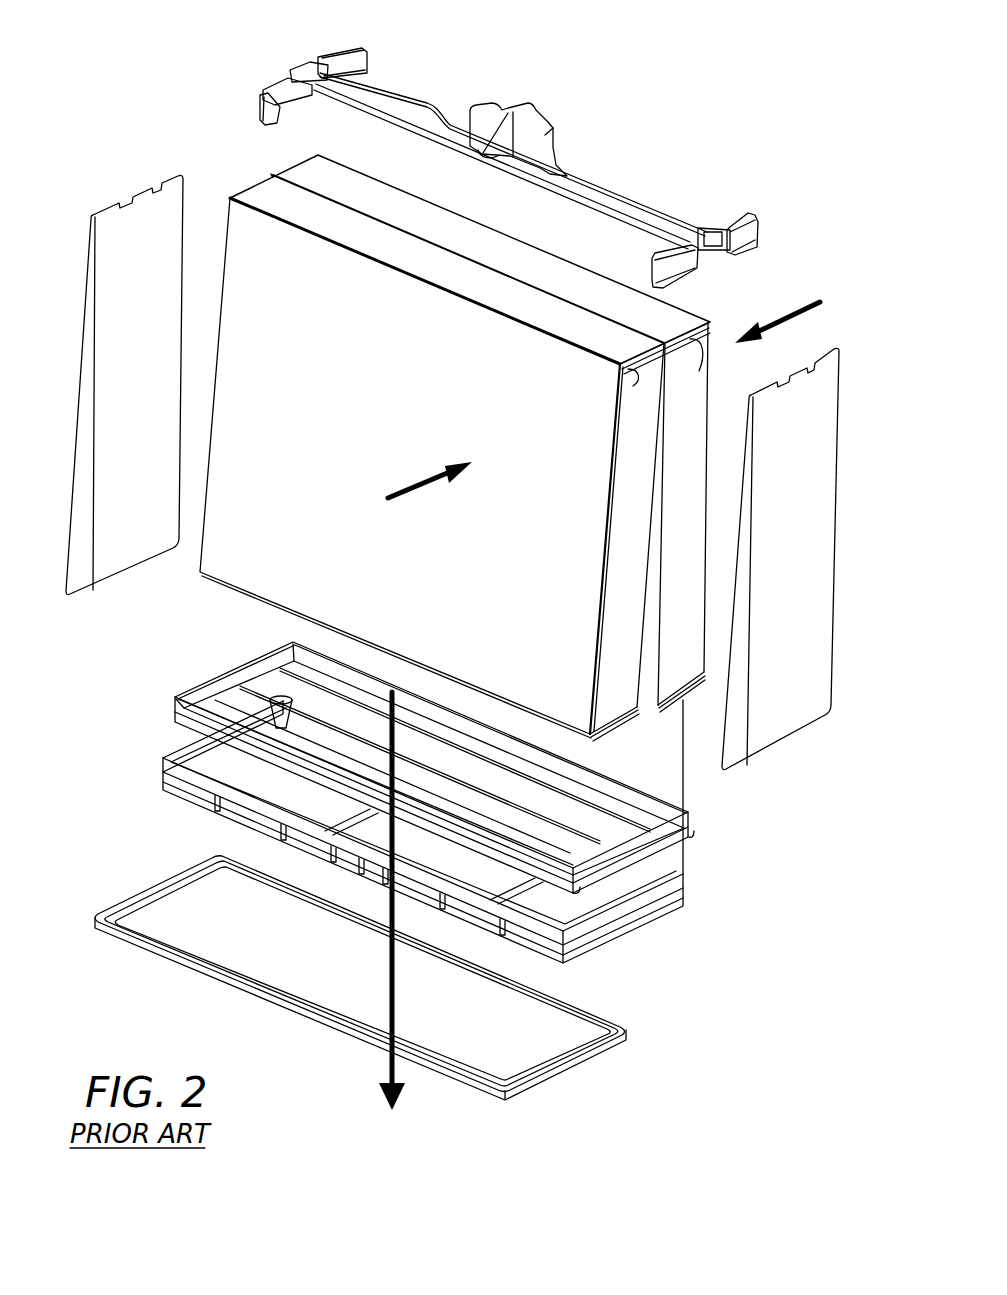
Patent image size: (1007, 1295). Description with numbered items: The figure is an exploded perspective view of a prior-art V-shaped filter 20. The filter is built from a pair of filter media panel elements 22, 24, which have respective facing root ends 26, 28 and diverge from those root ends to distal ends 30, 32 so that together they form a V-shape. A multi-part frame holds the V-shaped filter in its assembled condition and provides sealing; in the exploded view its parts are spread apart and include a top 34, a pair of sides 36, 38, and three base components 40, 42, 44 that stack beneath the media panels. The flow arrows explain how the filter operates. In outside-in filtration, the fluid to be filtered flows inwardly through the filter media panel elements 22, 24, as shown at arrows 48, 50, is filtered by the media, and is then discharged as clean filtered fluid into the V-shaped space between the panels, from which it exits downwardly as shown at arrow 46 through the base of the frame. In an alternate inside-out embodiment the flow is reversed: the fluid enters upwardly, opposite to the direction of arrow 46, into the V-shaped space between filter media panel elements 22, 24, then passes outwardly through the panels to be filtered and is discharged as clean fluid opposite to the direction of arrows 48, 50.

The V-shaped filter 20 is at (456, 561).
The filter media panel element 22 is at (617, 584).
The filter media panel element 24 is at (683, 465).
The root end 26 is at (632, 366).
The root end 28 is at (688, 341).
The distal end 30 is at (618, 728).
The distal end 32 is at (688, 693).
The top 34 is at (662, 207).
The side 36 is at (826, 476).
The side 38 is at (87, 288).
The base component 40 is at (693, 815).
The base component 42 is at (683, 878).
The base component 44 is at (628, 1032).
The arrow 46 is at (387, 1069).
The arrow 48 is at (420, 489).
The arrow 50 is at (783, 313).